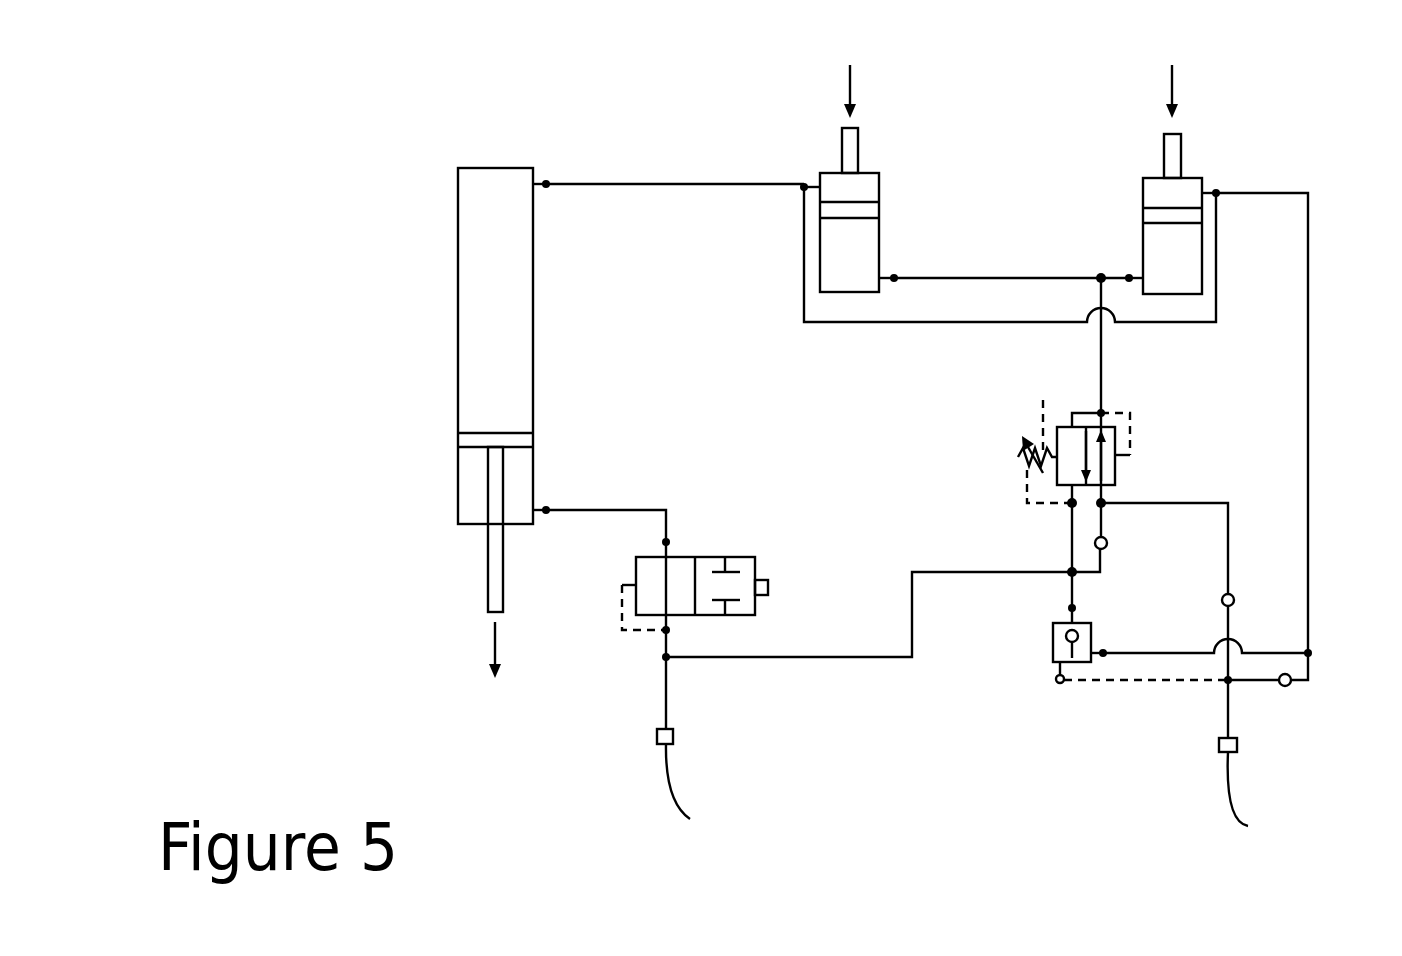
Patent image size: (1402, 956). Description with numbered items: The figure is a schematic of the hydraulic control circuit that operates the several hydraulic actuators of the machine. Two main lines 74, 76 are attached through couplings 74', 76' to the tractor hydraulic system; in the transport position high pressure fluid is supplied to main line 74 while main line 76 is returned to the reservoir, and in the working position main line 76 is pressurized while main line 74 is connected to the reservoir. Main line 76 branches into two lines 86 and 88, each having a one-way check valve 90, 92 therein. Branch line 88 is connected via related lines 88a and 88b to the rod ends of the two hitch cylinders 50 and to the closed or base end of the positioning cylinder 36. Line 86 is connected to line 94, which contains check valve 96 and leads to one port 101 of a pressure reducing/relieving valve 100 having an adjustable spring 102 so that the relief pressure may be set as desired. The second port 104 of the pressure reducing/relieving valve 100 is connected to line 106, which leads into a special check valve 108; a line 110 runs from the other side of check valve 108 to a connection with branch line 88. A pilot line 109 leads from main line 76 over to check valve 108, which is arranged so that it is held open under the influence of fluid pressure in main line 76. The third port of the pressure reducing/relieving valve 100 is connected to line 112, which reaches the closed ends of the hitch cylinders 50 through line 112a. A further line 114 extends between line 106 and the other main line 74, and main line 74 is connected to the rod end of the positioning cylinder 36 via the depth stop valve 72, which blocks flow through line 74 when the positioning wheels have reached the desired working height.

The positioning cylinder 36 is at (533, 325).
The hitch cylinders 50 is at (879, 192).
The depth stop valve 72 is at (742, 557).
The main line 74 is at (656, 586).
The coupling 74' is at (713, 797).
The main line 76 is at (1262, 733).
The coupling 76' is at (1274, 804).
The branch line 86 is at (1233, 561).
The branch line 88 is at (1308, 303).
The line 88a is at (890, 322).
The line 88b is at (678, 184).
The one-way check valve 90 is at (1234, 601).
The one-way check valve 92 is at (1290, 686).
The line 94 is at (1100, 572).
The check valve 96 is at (1107, 546).
The pressure reducing/relieving valve 100 is at (1240, 442).
The port 101 is at (1115, 490).
The adjustable spring 102 is at (1043, 404).
The second port 104 is at (1057, 487).
The line 106 is at (1072, 536).
The special check valve 108 is at (1050, 650).
The pilot line 109 is at (1178, 680).
The line 110 is at (1133, 655).
The line 112 is at (1101, 338).
The line 112a is at (925, 278).
The line 114 is at (830, 657).